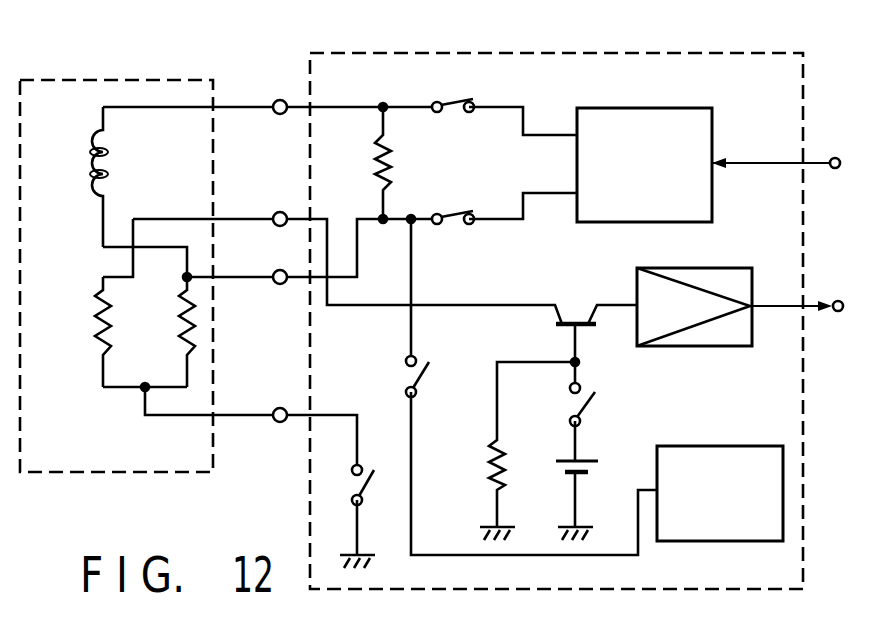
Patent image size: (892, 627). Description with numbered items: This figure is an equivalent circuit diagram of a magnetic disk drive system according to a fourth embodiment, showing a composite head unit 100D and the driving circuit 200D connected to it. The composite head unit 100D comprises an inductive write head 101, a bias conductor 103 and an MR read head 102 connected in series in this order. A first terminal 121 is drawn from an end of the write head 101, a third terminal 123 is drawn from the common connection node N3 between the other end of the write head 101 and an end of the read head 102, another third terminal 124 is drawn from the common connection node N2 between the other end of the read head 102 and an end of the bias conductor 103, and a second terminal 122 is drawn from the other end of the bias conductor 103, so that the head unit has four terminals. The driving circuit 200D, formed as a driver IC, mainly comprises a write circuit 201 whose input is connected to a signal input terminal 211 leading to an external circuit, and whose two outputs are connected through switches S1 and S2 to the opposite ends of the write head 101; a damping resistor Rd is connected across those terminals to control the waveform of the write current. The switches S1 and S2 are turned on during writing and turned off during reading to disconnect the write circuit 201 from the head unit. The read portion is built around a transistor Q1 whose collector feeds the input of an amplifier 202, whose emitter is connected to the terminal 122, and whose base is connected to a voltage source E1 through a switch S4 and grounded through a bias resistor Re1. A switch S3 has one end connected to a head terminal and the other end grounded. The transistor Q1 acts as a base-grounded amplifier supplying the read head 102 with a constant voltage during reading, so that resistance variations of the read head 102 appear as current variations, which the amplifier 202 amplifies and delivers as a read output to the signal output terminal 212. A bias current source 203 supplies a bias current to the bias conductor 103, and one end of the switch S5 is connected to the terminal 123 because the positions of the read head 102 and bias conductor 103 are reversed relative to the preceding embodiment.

The composite head unit 100D is at (137, 80).
The inductive write head 101 is at (107, 163).
The MR read head 102 is at (96, 322).
The bias conductor 103 is at (183, 330).
The common connection node N2 is at (143, 390).
The common connection node N3 is at (184, 276).
The first terminal 121 is at (280, 100).
The second terminal 122 is at (280, 212).
The third terminal 123 is at (280, 284).
The another third terminal 124 is at (280, 422).
The driving circuit 200D is at (725, 53).
The write circuit 201 is at (646, 108).
The amplifier 202 is at (665, 347).
The bias current source 203 is at (718, 446).
The signal input terminal 211 is at (835, 158).
The signal output terminal 212 is at (838, 300).
The switch S1 is at (440, 100).
The switch S2 is at (440, 212).
The switch S3 is at (368, 490).
The switch S4 is at (596, 394).
The switch S5 is at (404, 366).
The damping resistor Rd is at (375, 158).
The bias resistor Re1 is at (489, 466).
The transistor Q1 is at (552, 328).
The voltage source E1 is at (598, 468).